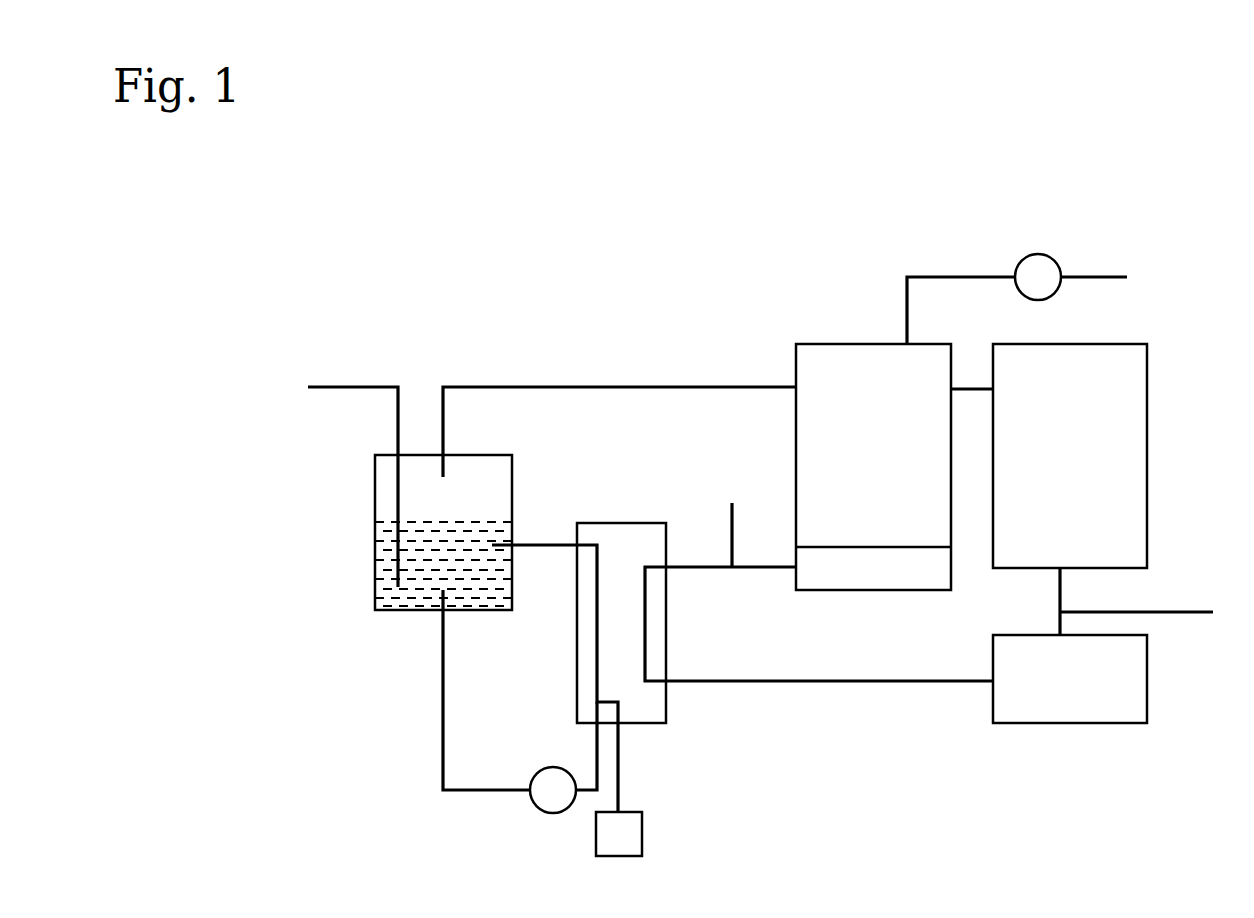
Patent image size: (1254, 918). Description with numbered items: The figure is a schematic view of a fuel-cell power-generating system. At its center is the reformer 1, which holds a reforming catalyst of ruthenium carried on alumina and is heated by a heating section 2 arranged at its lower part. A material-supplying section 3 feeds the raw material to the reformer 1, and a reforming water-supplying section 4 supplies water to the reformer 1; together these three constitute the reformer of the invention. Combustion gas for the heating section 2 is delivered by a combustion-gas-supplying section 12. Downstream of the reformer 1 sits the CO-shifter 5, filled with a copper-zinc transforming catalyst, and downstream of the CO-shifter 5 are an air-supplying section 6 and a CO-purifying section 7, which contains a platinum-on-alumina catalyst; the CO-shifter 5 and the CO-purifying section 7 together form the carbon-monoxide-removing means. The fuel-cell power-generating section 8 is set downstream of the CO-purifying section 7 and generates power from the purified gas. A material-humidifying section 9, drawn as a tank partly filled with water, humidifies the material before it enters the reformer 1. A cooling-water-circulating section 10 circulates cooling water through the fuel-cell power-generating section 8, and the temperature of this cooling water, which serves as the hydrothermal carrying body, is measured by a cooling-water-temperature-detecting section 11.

The reformer 1 is at (797, 342).
The heating section 2 is at (856, 592).
The material-supplying section 3 is at (374, 386).
The reforming water-supplying section 4 is at (1030, 255).
The CO-shifter 5 is at (1148, 367).
The air-supplying section 6 is at (1197, 610).
The CO-purifying section 7 is at (1025, 725).
The fuel-cell power-generating section 8 is at (668, 712).
The material-humidifying section 9 is at (514, 457).
The cooling-water-circulating section 10 is at (466, 795).
The cooling-water-temperature-detecting section 11 is at (645, 837).
The combustion-gas-supplying section 12 is at (732, 503).